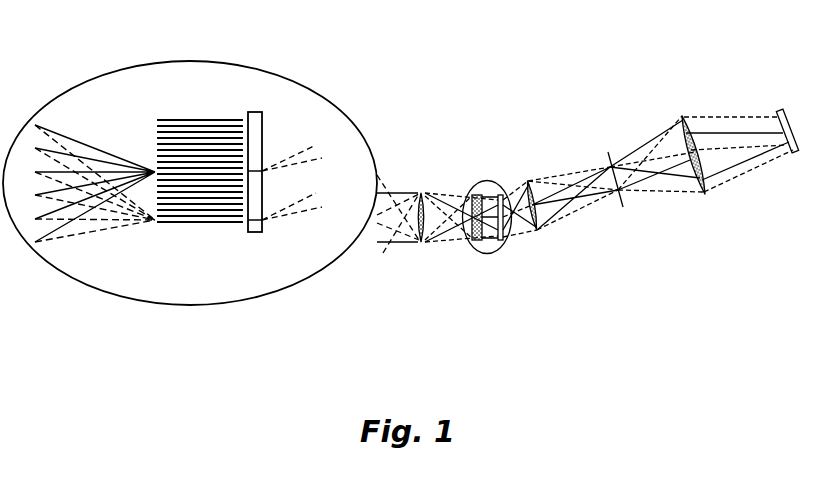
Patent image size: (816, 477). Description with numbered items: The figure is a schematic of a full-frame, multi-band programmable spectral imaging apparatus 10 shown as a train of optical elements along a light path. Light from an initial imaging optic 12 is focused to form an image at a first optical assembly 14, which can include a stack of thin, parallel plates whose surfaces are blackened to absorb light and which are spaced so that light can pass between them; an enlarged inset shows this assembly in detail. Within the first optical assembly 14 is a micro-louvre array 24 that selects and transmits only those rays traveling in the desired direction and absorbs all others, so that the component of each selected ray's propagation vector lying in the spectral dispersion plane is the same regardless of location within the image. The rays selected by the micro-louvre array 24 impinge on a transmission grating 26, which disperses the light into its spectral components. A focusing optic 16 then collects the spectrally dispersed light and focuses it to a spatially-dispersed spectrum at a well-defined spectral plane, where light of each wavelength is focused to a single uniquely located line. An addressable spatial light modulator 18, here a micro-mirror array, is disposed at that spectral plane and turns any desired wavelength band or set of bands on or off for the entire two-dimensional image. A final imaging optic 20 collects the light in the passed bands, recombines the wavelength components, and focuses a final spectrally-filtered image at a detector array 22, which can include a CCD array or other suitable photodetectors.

The apparatus 10 is at (474, 57).
The initial imaging optic 12 is at (421, 191).
The first optical assembly 14 is at (499, 173).
The focusing optic 16 is at (536, 228).
The addressable spatial light modulator 18 is at (608, 151).
The final imaging optic 20 is at (684, 117).
The detector array 22 is at (783, 113).
The micro-louvre array 24 is at (142, 129).
The transmission grating 26 is at (258, 112).